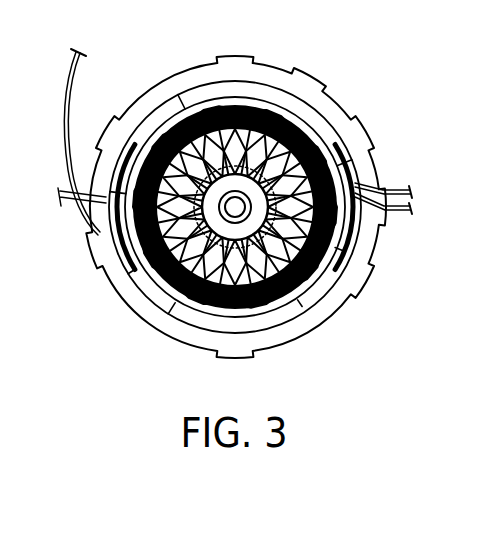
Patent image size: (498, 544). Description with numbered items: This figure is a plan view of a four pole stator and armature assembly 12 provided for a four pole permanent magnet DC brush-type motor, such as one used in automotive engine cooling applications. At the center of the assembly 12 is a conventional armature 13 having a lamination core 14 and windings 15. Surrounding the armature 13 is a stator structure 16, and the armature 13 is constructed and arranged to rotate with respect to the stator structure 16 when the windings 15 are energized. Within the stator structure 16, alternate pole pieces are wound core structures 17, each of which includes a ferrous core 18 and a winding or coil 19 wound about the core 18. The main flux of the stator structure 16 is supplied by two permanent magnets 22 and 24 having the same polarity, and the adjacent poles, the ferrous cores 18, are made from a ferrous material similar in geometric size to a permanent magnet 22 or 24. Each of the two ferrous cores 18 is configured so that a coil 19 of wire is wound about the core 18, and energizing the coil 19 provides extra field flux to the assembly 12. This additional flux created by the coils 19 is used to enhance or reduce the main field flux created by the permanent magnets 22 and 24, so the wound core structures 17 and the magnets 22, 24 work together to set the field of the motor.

The stator and armature assembly 12 is at (344, 81).
The armature 13 is at (300, 312).
The lamination core 14 is at (178, 102).
The windings 15 is at (165, 122).
The stator structure 16 is at (220, 68).
The wound core structure 17 is at (364, 165).
The ferrous core 18 is at (375, 263).
The coil 19 is at (378, 222).
The permanent magnet 22 is at (260, 88).
The permanent magnet 24 is at (201, 322).